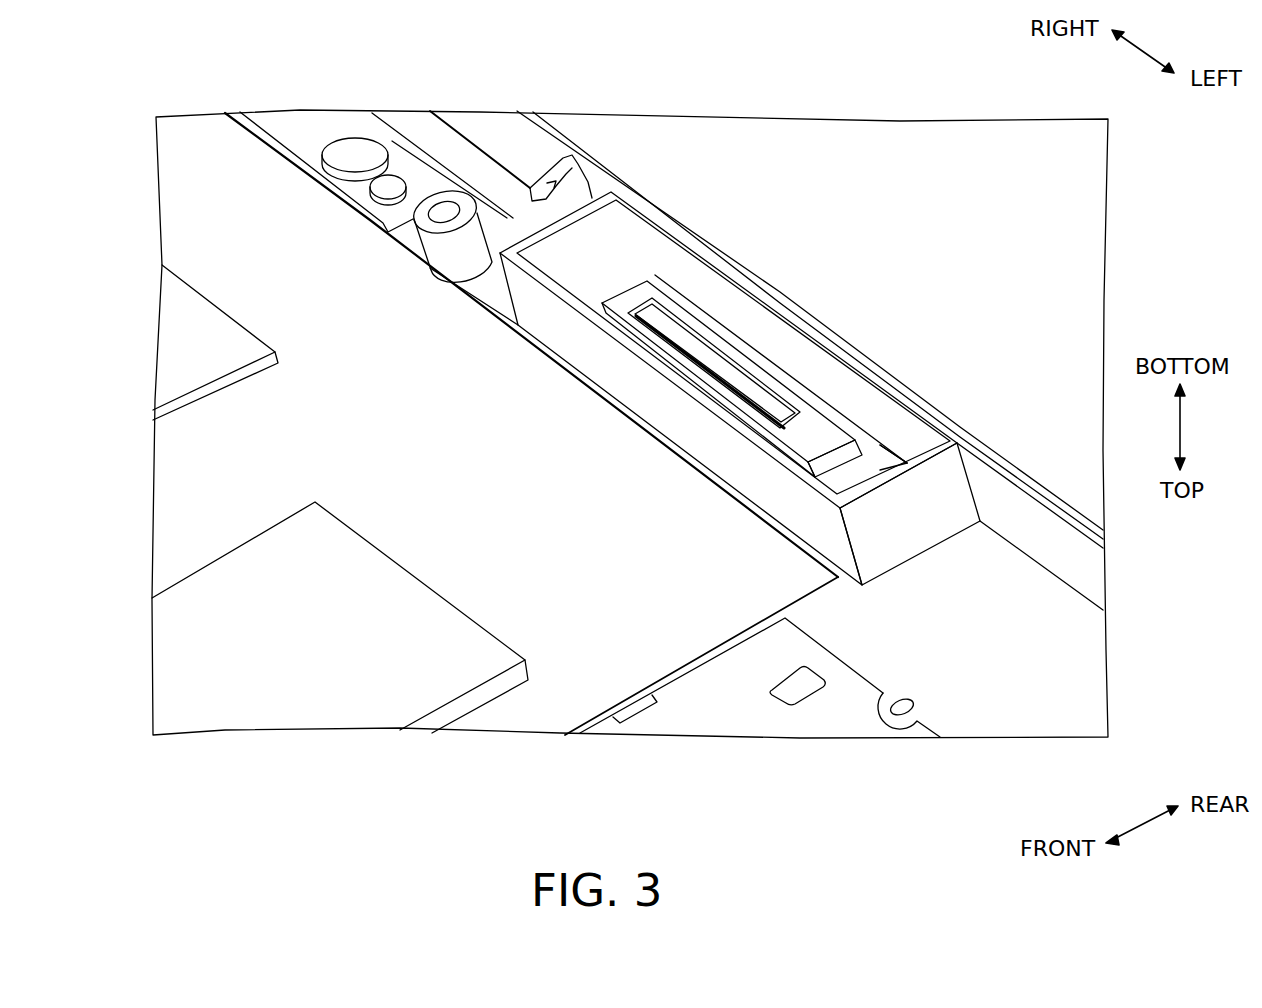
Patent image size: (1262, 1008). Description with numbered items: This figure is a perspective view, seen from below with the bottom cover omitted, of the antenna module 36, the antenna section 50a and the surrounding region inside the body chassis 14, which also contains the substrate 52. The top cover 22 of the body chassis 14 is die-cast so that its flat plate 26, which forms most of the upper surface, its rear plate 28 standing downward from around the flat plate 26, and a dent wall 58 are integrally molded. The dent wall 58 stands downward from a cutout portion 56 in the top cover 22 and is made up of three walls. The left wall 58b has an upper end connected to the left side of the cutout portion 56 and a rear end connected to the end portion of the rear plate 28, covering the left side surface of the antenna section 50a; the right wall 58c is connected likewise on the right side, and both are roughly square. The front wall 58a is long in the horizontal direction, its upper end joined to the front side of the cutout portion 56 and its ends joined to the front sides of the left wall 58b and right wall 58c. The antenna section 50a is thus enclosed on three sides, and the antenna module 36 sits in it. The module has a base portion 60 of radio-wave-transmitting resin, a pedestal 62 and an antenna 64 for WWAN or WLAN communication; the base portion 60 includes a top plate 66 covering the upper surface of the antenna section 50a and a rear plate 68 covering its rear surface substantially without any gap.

The body chassis 14 is at (1078, 370).
The top cover 22 is at (392, 94).
The flat plate 26 is at (495, 287).
The rear plate 28 is at (1050, 543).
The antenna module 36 is at (948, 388).
The antenna section 50a is at (692, 273).
The substrate 52 is at (598, 648).
The cutout portion 56 is at (618, 290).
The dent wall 58 is at (558, 330).
The front wall 58a is at (733, 258).
The left wall 58b is at (888, 533).
The right wall 58c is at (593, 230).
The base portion 60 is at (845, 415).
The pedestal 62 is at (800, 402).
The antenna 64 is at (713, 363).
The top plate 66 is at (880, 467).
The rear plate 68 is at (896, 242).